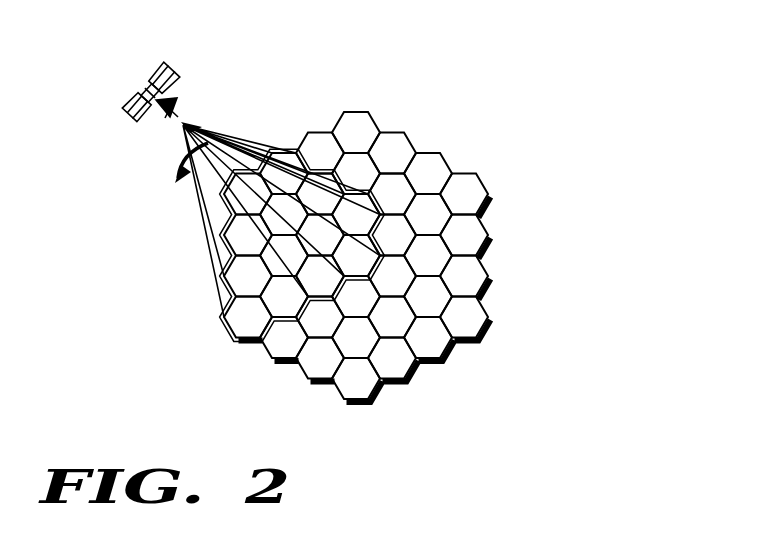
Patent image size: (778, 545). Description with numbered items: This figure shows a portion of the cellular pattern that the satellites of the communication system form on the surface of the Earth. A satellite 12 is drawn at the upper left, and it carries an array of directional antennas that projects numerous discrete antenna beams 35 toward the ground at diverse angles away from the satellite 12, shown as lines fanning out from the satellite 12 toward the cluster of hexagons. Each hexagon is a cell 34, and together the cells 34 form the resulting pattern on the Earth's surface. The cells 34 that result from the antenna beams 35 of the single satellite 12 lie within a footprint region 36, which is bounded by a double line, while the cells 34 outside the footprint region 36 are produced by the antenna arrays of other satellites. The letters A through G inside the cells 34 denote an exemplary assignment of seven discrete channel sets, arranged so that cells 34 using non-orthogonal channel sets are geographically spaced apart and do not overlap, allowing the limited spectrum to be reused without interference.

The satellite 12 is at (178, 65).
The cell 34 is at (307, 172).
The antenna beam 35 is at (179, 180).
The footprint region 36 is at (233, 295).